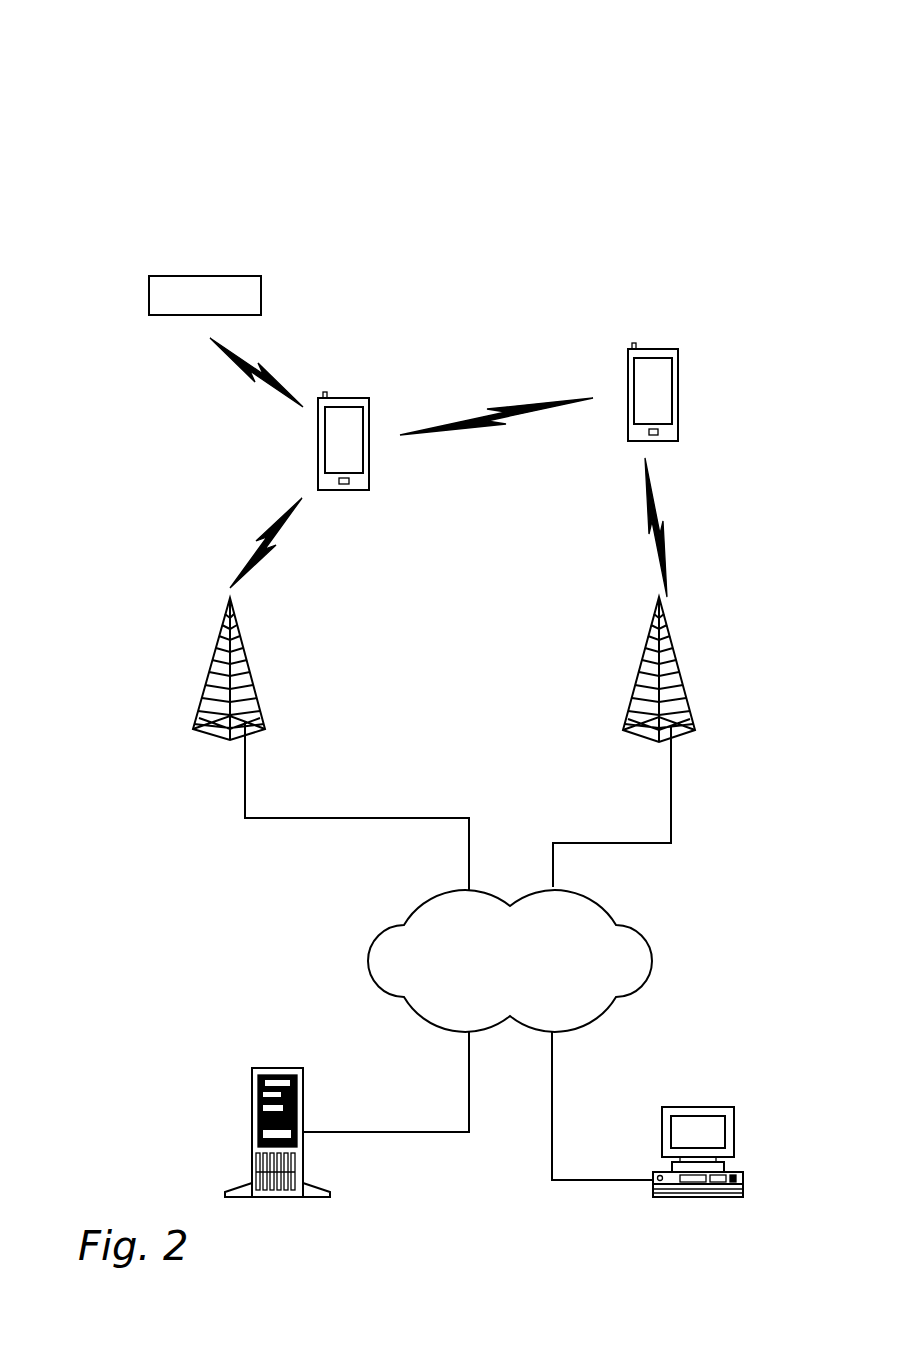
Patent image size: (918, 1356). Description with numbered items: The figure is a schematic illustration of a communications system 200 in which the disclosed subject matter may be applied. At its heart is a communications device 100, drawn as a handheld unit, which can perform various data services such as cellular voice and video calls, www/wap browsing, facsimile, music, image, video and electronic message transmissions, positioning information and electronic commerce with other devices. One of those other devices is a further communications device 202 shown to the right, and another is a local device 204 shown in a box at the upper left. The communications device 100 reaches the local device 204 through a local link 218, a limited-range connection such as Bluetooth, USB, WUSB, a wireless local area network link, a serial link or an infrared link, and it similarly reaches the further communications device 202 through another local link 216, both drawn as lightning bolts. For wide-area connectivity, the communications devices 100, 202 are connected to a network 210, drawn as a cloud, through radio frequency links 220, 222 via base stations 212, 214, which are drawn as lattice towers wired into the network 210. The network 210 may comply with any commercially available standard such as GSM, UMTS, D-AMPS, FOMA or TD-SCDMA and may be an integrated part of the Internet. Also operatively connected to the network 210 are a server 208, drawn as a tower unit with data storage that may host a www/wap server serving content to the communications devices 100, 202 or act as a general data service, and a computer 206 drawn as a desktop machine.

The communications system 200 is at (168, 64).
The local device 204 is at (149, 293).
The communications device 100 is at (344, 396).
The further communications device 202 is at (652, 348).
The local link 218 is at (233, 368).
The local link 216 is at (485, 432).
The radio frequency link 220 is at (262, 537).
The radio frequency link 222 is at (668, 527).
The base station 212 is at (255, 681).
The base station 214 is at (684, 670).
The network 210 is at (531, 974).
The server 208 is at (252, 1080).
The computer 206 is at (700, 1107).